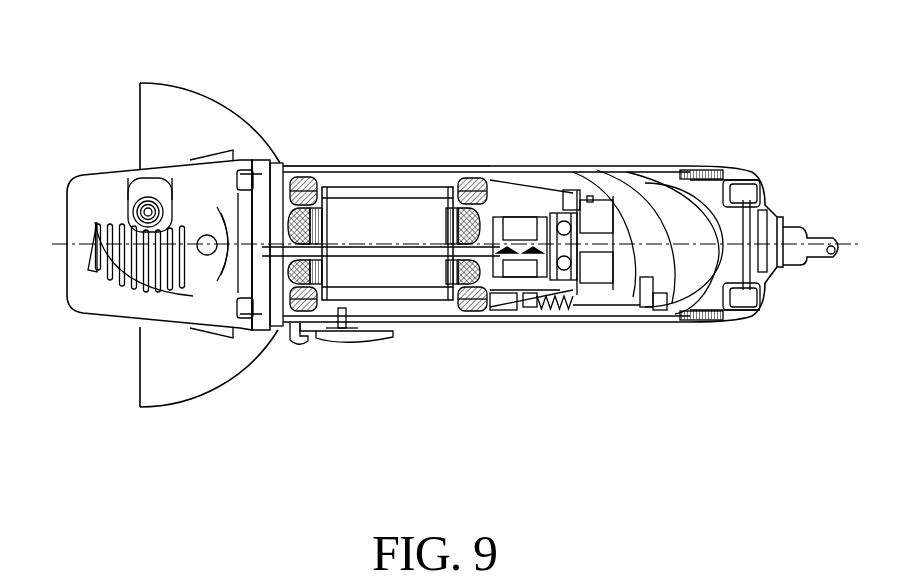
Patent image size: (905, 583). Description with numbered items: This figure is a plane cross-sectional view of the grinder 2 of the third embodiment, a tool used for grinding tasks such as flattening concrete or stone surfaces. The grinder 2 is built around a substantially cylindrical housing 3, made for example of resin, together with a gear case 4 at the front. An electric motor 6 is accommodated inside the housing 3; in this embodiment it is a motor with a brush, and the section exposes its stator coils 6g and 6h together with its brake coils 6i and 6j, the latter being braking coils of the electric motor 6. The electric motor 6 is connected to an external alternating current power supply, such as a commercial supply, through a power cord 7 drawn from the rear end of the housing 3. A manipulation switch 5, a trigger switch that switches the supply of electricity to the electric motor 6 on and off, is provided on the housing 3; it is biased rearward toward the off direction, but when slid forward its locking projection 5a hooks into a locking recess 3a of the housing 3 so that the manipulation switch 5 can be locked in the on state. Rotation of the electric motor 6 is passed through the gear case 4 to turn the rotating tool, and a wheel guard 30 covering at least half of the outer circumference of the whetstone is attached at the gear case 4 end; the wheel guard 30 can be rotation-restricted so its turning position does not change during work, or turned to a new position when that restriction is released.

The grinder 2 is at (600, 157).
The housing 3 is at (510, 167).
The locking recess 3a is at (290, 327).
The gear case 4 is at (87, 170).
The manipulation switch 5 is at (340, 335).
The locking projection 5a is at (308, 343).
The electric motor 6 is at (371, 213).
The stator coil 6g is at (313, 177).
The stator coil 6h is at (470, 310).
The brake coil 6i is at (310, 215).
The brake coil 6j is at (462, 284).
The power cord 7 is at (820, 227).
The wheel guard 30 is at (160, 408).